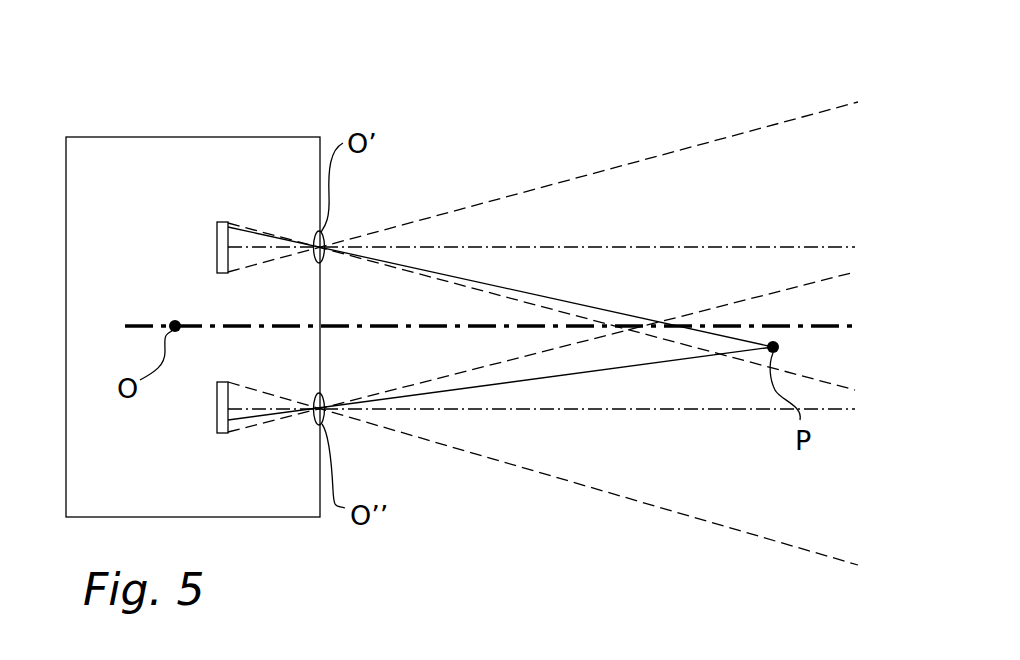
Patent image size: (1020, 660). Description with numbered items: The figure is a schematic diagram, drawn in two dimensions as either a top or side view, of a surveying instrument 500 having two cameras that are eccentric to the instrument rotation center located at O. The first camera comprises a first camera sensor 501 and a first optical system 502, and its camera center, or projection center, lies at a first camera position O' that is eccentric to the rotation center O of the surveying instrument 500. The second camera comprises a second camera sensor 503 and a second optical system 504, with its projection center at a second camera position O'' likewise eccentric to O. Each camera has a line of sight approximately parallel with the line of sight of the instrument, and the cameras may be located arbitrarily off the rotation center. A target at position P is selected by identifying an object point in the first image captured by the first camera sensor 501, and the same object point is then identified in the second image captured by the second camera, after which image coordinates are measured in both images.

The surveying instrument 500 is at (140, 138).
The first camera sensor 501 is at (217, 262).
The first optical system 502 is at (314, 246).
The second camera sensor 503 is at (217, 417).
The second optical system 504 is at (313, 410).